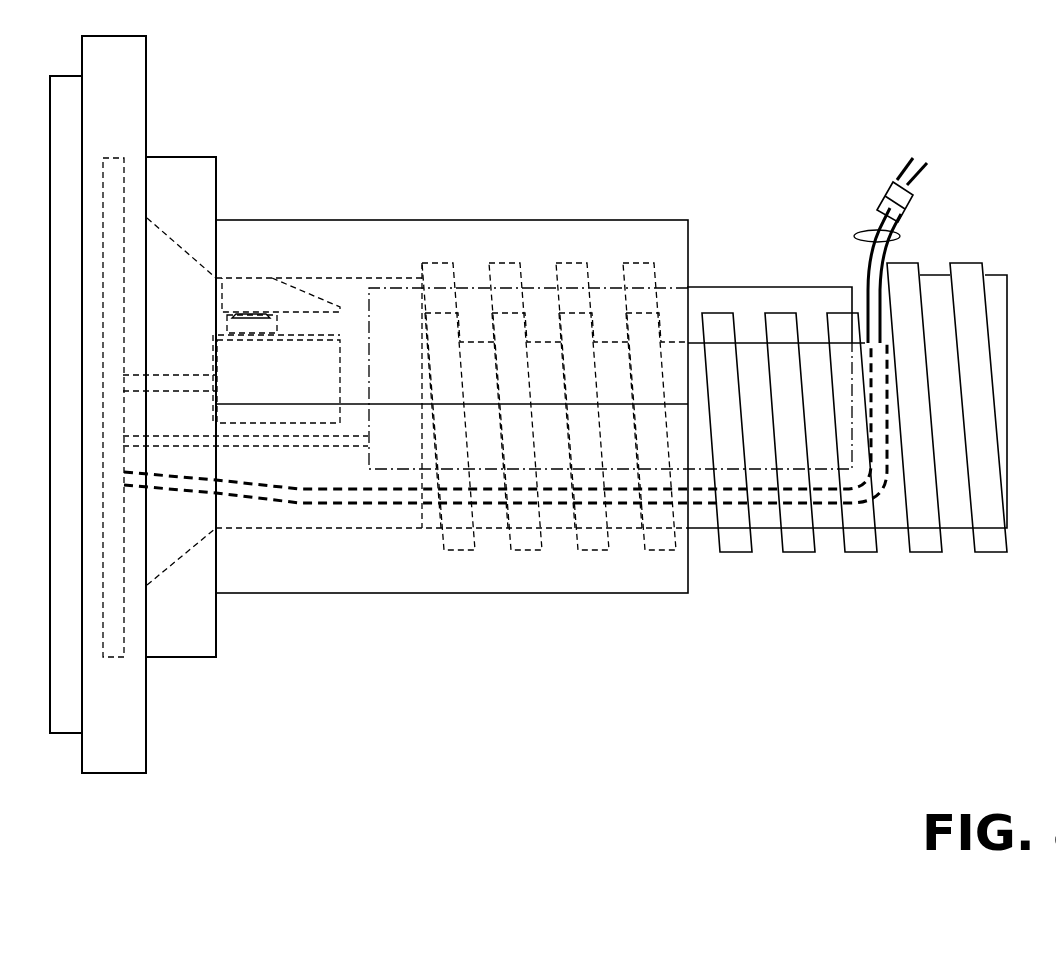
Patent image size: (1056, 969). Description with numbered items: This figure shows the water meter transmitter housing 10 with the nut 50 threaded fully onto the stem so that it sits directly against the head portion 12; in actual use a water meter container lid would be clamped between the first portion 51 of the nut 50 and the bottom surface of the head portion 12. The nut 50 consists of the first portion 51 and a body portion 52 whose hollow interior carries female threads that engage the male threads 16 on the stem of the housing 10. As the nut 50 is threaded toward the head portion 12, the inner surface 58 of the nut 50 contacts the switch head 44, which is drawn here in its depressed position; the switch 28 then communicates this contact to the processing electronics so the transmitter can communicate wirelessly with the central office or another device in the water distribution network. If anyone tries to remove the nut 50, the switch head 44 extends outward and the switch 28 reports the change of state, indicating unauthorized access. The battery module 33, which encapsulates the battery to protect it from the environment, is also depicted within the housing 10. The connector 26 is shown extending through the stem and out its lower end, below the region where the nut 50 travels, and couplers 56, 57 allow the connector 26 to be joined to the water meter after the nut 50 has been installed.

The water meter transmitter housing 10 is at (868, 700).
The head portion 12 is at (148, 785).
The threads 16 is at (1007, 563).
The connector 26 is at (858, 232).
The switch 28 is at (290, 388).
The battery module 33 is at (765, 287).
The switch head 44 is at (298, 289).
The nut 50 is at (690, 662).
The first portion 51 is at (217, 608).
The body portion 52 is at (470, 593).
The coupler 56 is at (892, 186).
The coupler 57 is at (912, 220).
The inner surface 58 is at (353, 290).